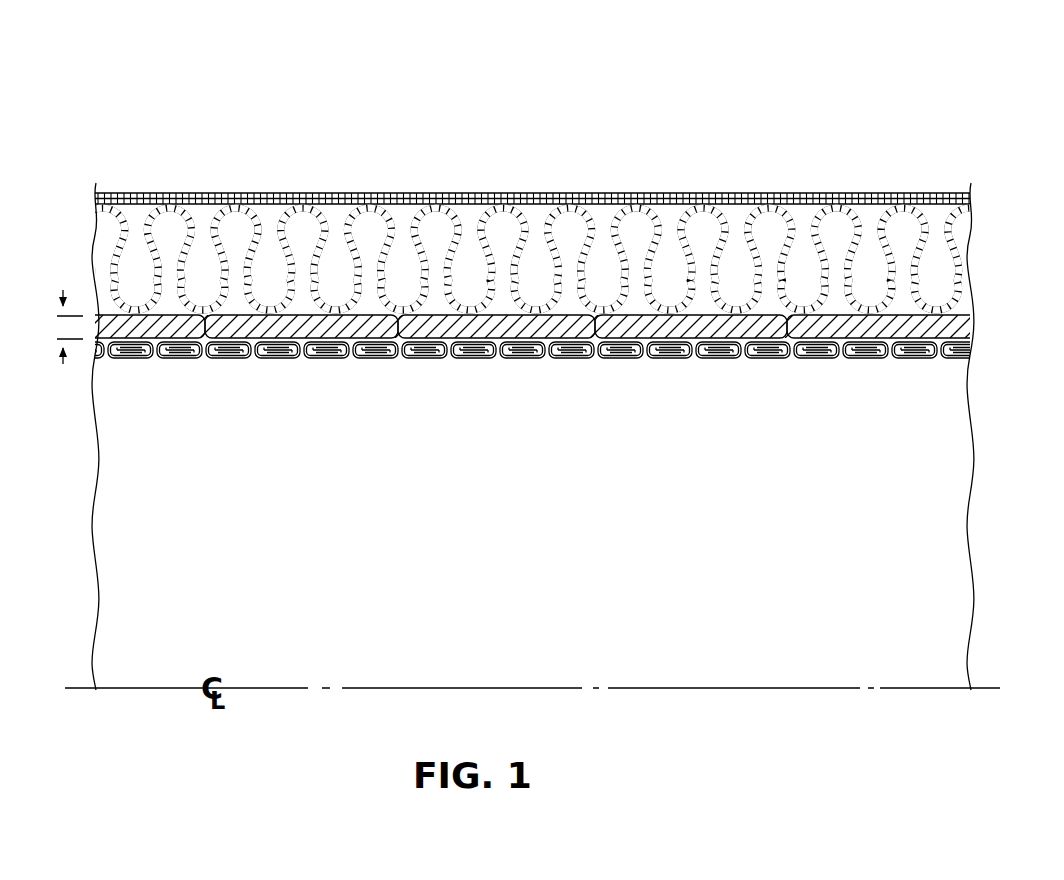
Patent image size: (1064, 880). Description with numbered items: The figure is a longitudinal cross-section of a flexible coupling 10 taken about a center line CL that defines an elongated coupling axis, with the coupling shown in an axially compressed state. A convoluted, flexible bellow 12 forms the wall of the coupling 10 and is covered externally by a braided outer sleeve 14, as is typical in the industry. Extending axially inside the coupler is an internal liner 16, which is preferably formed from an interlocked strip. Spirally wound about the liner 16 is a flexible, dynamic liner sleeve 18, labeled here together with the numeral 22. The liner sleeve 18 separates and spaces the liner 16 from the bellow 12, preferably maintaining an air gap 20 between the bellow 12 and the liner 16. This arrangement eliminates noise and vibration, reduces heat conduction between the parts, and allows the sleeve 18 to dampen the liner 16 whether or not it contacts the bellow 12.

The flexible coupling 10 is at (941, 113).
The convoluted flexible bellow 12 is at (932, 211).
The braided outer sleeve 14 is at (504, 193).
The internal liner 16 is at (278, 358).
The liner sleeve 18 is at (341, 333).
The air gap 20 is at (68, 316).
The elastomeric segments 22 is at (341, 333).